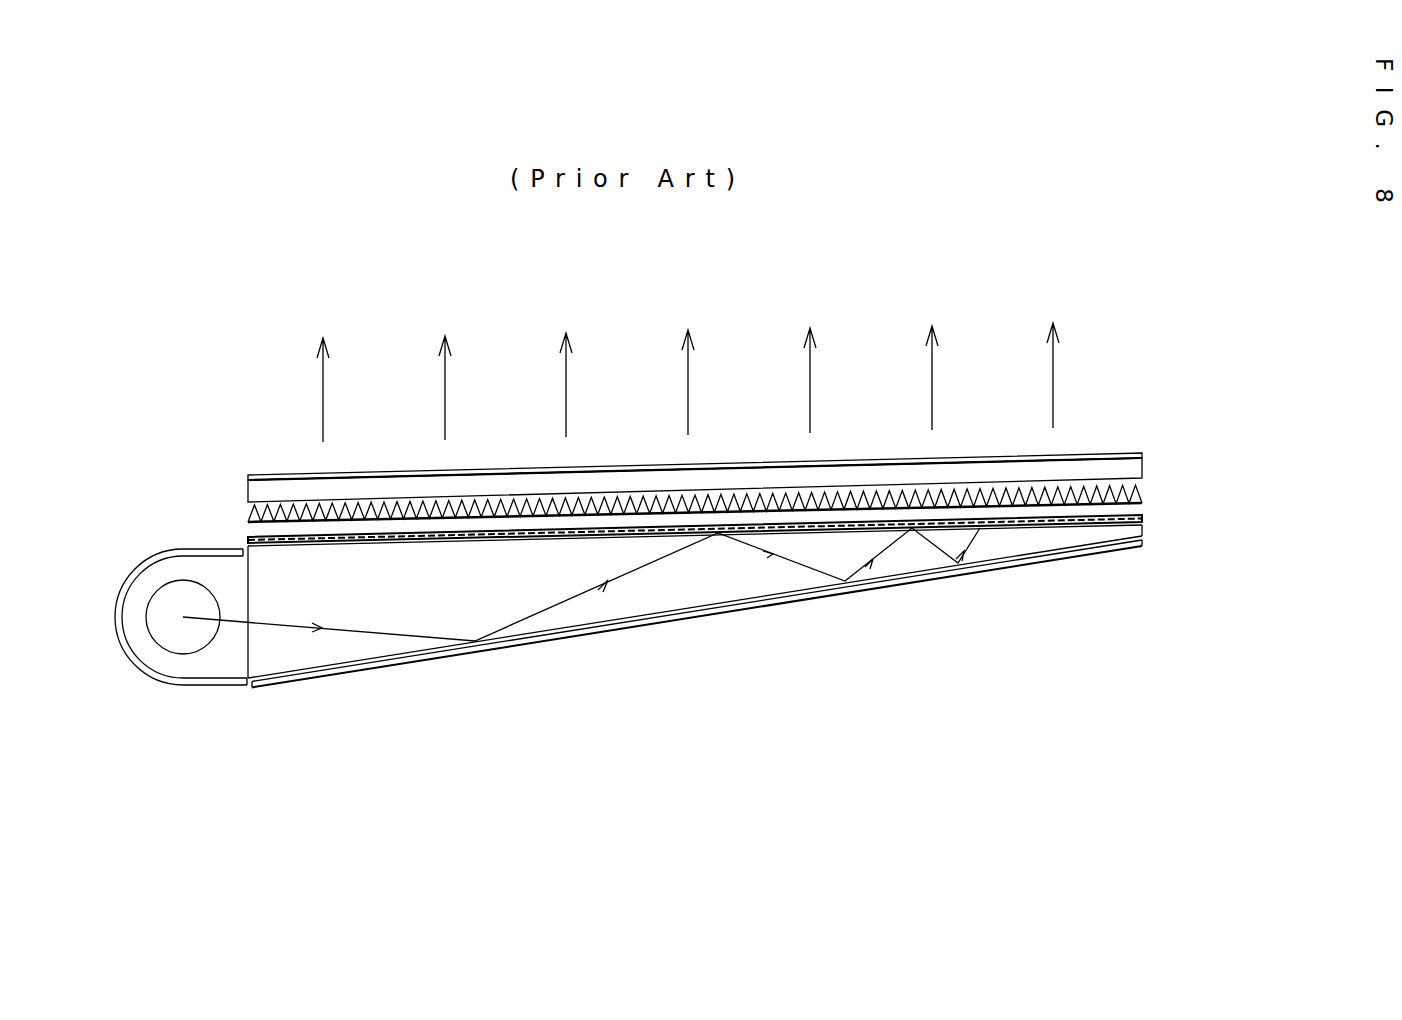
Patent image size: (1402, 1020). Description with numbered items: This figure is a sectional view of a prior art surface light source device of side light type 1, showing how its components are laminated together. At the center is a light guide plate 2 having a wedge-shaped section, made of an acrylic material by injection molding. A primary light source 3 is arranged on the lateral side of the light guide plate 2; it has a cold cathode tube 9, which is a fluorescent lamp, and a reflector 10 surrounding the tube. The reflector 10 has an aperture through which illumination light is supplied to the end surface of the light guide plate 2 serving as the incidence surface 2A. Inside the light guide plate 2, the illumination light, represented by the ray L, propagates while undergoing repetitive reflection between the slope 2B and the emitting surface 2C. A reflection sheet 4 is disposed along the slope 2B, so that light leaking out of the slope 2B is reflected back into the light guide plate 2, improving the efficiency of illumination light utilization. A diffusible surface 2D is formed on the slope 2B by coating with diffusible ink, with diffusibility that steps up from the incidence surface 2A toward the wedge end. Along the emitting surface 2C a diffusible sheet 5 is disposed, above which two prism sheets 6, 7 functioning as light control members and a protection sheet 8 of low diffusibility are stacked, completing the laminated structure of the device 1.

The surface light source device of side light type 1 is at (914, 714).
The light guide plate 2 is at (695, 574).
The incidence surface 2A is at (250, 610).
The slope 2B is at (478, 640).
The emitting surface 2C is at (487, 537).
The diffusible surface 2D is at (822, 587).
The primary light source 3 is at (156, 615).
The reflection sheet 4 is at (757, 607).
The diffusible sheet 5 is at (1143, 515).
The prism sheet 6 is at (1133, 498).
The prism sheet 7 is at (1132, 472).
The protection sheet 8 is at (1138, 453).
The cold cathode tube 9 is at (196, 644).
The reflector 10 is at (132, 665).
The light ray L is at (383, 633).